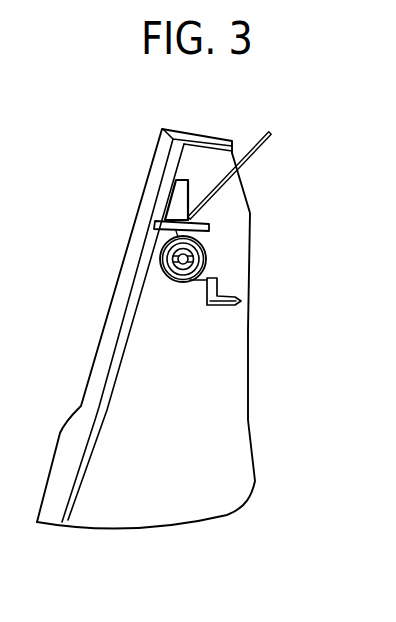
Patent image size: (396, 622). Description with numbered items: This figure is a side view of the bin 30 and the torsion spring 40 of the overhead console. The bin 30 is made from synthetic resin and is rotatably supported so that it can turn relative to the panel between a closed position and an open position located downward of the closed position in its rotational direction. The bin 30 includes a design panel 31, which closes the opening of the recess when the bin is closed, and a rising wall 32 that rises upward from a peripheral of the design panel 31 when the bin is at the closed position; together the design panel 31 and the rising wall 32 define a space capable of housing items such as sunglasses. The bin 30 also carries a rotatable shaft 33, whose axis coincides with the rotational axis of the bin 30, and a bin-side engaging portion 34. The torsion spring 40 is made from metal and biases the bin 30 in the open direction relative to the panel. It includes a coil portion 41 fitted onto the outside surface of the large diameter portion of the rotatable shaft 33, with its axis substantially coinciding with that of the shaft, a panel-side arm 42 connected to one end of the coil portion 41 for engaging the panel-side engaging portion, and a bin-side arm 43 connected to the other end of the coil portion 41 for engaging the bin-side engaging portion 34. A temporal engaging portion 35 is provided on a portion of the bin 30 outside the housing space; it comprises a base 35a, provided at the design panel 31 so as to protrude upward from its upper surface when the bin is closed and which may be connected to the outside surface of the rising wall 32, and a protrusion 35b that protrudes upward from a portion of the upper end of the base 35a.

The bin 30 is at (169, 329).
The design panel 31 is at (102, 357).
The rising wall 32 is at (200, 400).
The rotatable shaft 33 is at (132, 299).
The bin-side engaging portion 34 is at (226, 295).
The temporal engaging portion 35 is at (245, 207).
The base 35a is at (188, 214).
The protrusion 35b is at (208, 227).
The torsion spring 40 is at (177, 284).
The coil portion 41 is at (172, 280).
The panel-side arm 42 is at (257, 141).
The bin-side arm 43 is at (201, 281).